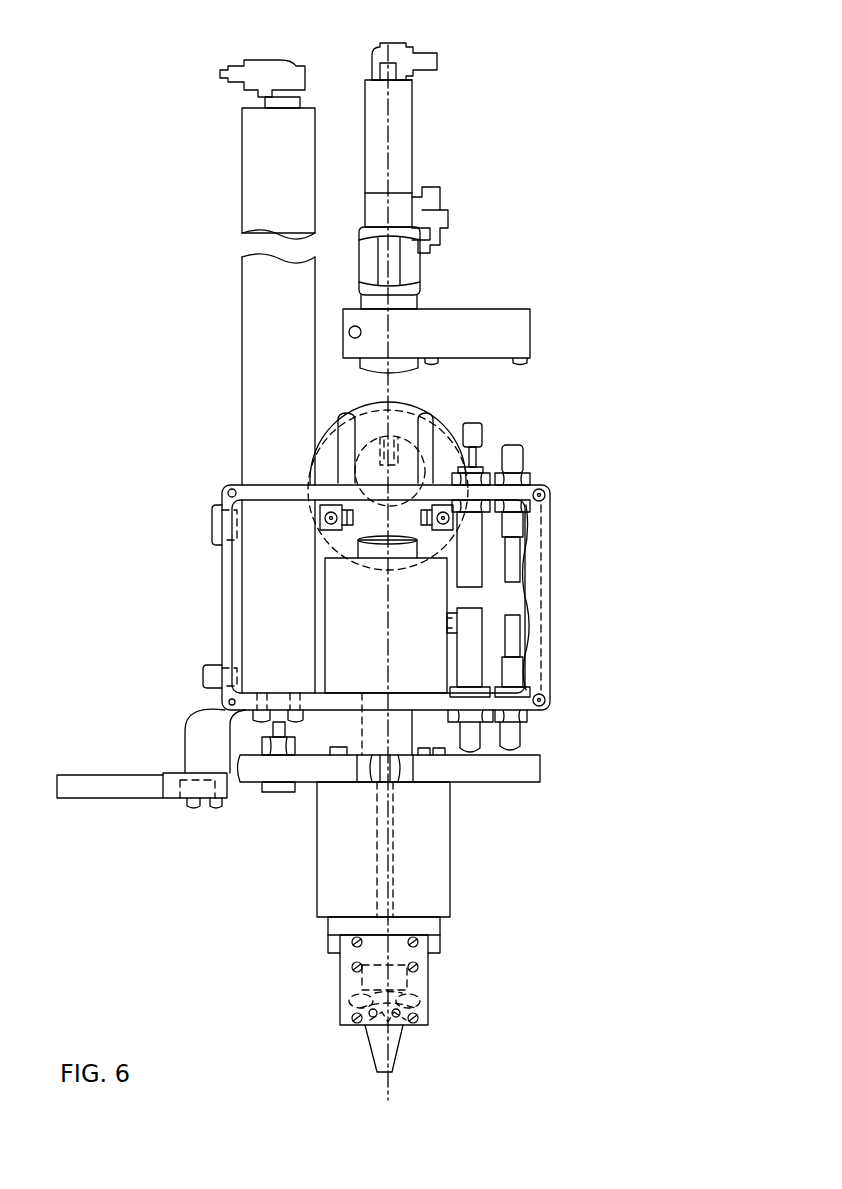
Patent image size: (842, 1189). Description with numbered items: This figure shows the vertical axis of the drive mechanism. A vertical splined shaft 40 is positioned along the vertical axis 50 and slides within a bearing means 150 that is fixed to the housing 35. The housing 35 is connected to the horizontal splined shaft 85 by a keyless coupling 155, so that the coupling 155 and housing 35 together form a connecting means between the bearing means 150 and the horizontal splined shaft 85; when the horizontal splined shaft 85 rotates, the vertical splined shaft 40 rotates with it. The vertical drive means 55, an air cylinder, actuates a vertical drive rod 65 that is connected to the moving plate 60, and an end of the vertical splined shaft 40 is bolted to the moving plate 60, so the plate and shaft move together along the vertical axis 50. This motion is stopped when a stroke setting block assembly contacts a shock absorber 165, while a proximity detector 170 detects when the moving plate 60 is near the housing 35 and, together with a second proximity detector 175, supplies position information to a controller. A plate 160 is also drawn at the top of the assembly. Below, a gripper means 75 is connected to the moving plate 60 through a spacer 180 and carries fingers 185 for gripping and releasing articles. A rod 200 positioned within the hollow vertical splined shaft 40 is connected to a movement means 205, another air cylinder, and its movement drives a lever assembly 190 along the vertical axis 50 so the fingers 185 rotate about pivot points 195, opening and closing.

The housing 35 is at (222, 488).
The vertical splined shaft 40 is at (417, 370).
The vertical axis 50 is at (378, 115).
The vertical drive means 55 is at (242, 300).
The moving plate 60 is at (540, 768).
The vertical drive rod 65 is at (272, 727).
The gripper means 75 is at (428, 982).
The horizontal splined shaft 85 is at (358, 470).
The bearing means 150 is at (325, 623).
The coupling 155 is at (378, 470).
The top plate 160 is at (532, 322).
The shock absorber 165 is at (482, 428).
The proximity detector 170 is at (523, 458).
The proximity detector 175 is at (523, 733).
The spacer 180 is at (317, 850).
The fingers 185 is at (372, 1060).
The lever assembly 190 is at (362, 980).
The pivot points 195 is at (350, 1015).
The rod 200 is at (393, 825).
The movement means 205 is at (413, 128).